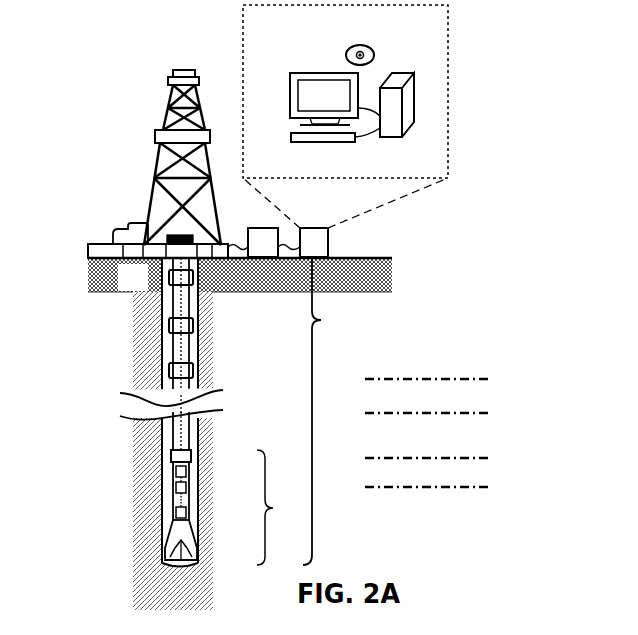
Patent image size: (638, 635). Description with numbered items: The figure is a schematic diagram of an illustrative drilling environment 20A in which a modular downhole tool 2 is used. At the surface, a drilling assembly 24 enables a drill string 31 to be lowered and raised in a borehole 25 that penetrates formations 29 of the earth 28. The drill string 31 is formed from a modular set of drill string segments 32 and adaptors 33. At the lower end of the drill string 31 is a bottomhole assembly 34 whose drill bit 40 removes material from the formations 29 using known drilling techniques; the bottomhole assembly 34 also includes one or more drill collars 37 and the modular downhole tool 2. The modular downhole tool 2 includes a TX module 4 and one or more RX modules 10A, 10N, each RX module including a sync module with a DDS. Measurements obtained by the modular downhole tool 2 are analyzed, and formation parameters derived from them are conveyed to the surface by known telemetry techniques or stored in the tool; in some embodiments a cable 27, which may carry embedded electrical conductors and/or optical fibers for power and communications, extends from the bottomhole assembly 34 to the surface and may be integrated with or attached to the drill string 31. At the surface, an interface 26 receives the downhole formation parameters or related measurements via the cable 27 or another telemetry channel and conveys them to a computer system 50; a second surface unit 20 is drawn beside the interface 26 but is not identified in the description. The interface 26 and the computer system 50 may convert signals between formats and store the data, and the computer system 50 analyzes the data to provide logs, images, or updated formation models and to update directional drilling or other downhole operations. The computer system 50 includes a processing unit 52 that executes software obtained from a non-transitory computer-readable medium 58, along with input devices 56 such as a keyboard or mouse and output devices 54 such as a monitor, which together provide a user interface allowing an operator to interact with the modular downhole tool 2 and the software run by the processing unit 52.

The drilling environment 20A is at (128, 58).
The drilling assembly 24 is at (88, 73).
The computer system 50 is at (448, 95).
The processing unit 52 is at (401, 73).
The output device 54 is at (290, 97).
The input device 56 is at (346, 140).
The non-transitory computer-readable medium 58 is at (353, 44).
The interface 26 is at (264, 230).
The surface control unit 20 is at (330, 243).
The earth 28 is at (144, 288).
The borehole 25 is at (200, 301).
The drill string segments 32 is at (190, 308).
The adaptors 33 is at (168, 323).
The drill string 31 is at (327, 411).
The formations 29 is at (497, 368).
The cable 27 is at (191, 437).
The drill collar 37 is at (192, 460).
The modular downhole tool 2 is at (166, 477).
The TX module 4 is at (172, 467).
The RX module 10A is at (173, 483).
The RX module 10N is at (173, 512).
The drill bit 40 is at (198, 545).
The bottomhole assembly 34 is at (279, 507).